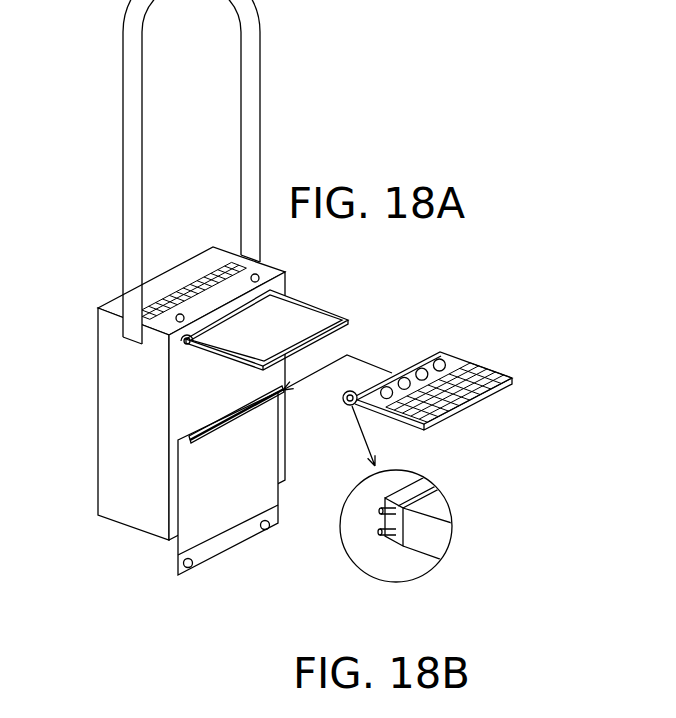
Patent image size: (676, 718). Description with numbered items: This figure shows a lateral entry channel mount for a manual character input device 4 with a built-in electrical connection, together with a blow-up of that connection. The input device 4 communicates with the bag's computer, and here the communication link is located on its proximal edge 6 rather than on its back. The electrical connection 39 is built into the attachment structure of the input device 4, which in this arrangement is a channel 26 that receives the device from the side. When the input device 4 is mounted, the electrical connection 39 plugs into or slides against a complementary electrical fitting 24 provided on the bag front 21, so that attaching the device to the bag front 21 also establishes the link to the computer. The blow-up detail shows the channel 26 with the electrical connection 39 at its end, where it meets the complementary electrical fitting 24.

In FIG. 18A, the bag front 21 is at (188, 373).
In FIG. 18A, the complementary electrical fitting 24 is at (192, 440).
In FIG. 18A, the input device 4 is at (470, 408).
In FIG. 18A, the proximal edge 6 is at (412, 348).
In FIG. 18B, the channel 26 is at (410, 493).
In FIG. 18B, the electrical connection 39 is at (385, 534).